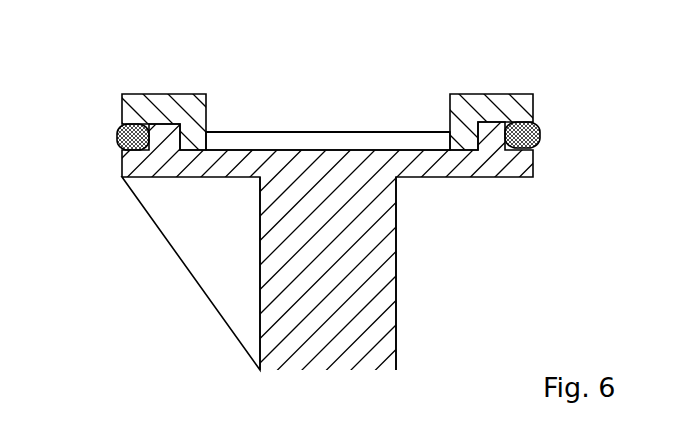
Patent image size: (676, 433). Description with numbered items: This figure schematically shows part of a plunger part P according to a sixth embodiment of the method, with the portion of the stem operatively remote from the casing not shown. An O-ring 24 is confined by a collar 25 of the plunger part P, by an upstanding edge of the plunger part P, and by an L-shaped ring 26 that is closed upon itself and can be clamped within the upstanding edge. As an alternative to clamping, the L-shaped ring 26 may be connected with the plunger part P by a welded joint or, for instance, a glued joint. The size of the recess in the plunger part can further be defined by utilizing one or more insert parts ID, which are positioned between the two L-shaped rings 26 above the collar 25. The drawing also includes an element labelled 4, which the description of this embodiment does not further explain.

The membrane plate 4 is at (252, 113).
The insert part ID is at (326, 141).
The O-ring 24 is at (540, 135).
The collar 25 is at (134, 165).
The L-shaped ring 26 is at (495, 113).
The plunger part P is at (424, 256).